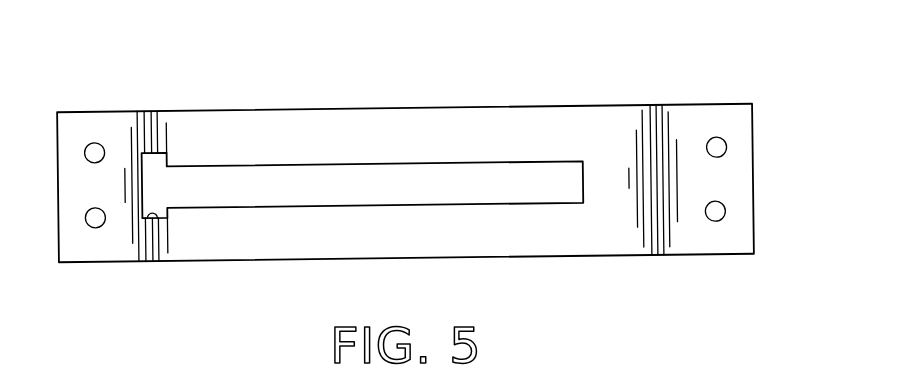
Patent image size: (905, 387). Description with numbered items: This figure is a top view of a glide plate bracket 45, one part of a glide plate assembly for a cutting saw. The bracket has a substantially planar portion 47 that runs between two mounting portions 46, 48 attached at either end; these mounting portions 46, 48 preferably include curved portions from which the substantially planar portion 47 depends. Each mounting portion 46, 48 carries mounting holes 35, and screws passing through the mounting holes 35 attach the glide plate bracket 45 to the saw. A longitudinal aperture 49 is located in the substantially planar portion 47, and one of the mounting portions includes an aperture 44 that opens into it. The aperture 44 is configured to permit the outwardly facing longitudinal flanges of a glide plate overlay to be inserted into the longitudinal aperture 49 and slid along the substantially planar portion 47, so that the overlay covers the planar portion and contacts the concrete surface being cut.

The glide plate bracket 45 is at (435, 168).
The mounting portion 46 is at (103, 110).
The substantially planar portion 47 is at (367, 117).
The mounting portion 48 is at (683, 103).
The longitudinal aperture 49 is at (358, 200).
The aperture 44 is at (154, 212).
The mounting holes 35 is at (724, 142).